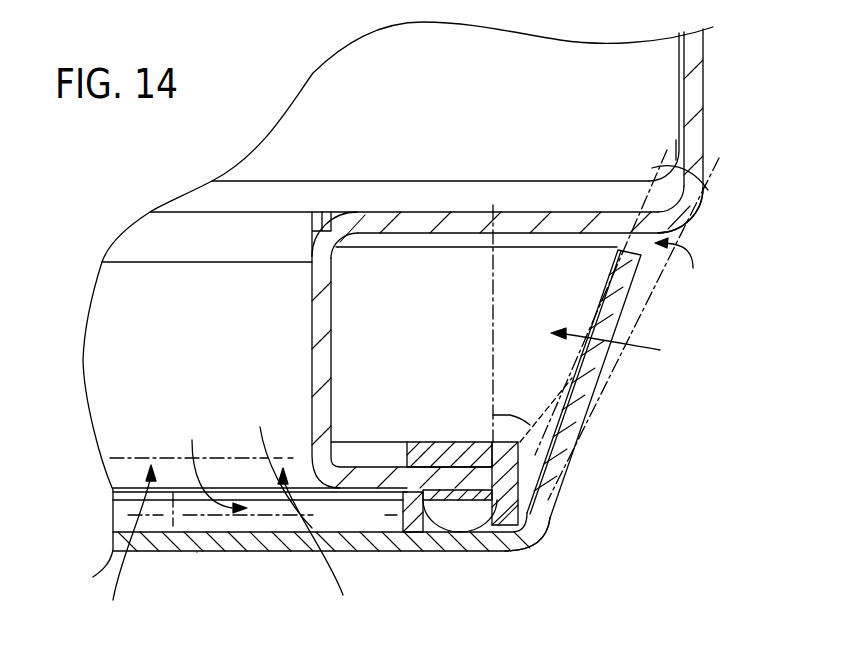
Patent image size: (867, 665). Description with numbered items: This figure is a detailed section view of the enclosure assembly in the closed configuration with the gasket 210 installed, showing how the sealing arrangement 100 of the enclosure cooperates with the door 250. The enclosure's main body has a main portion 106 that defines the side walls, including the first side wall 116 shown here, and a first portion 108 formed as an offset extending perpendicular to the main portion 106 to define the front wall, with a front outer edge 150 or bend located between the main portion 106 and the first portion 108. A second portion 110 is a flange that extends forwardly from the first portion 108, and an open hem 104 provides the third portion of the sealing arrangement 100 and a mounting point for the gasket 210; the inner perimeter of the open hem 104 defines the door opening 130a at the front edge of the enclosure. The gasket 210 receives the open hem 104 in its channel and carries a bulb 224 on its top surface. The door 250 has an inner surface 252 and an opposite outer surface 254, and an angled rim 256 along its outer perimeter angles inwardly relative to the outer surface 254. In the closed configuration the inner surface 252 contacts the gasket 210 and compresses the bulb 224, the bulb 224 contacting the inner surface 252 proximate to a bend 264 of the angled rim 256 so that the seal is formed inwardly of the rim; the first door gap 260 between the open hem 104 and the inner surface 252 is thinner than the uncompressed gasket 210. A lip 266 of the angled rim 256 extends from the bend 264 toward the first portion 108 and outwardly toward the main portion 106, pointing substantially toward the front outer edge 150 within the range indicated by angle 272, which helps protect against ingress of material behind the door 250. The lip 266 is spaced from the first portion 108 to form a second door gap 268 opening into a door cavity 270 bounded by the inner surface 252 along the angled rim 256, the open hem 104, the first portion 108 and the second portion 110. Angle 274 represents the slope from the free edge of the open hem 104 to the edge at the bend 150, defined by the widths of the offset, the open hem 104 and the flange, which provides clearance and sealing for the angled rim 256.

The sealing arrangement 100 is at (590, 60).
The open hem 104 is at (468, 475).
The main portion 106 is at (695, 137).
The first portion 108 is at (470, 216).
The second portion 110 is at (315, 385).
The first side wall 116 is at (688, 80).
The door opening 130a is at (229, 545).
The front outer edge 150 is at (688, 207).
The gasket 210 is at (415, 442).
The bulb 224 is at (461, 515).
The door 250 is at (278, 548).
The inner surface 252 is at (277, 465).
The outer surface 254 is at (197, 552).
The angled rim 256 is at (605, 373).
The first door gap 260 is at (212, 464).
The bend 264 is at (532, 537).
The lip 266 is at (660, 168).
The second door gap 268 is at (685, 265).
The door cavity 270 is at (625, 346).
The angle 272 is at (678, 150).
The angle 274 is at (510, 415).